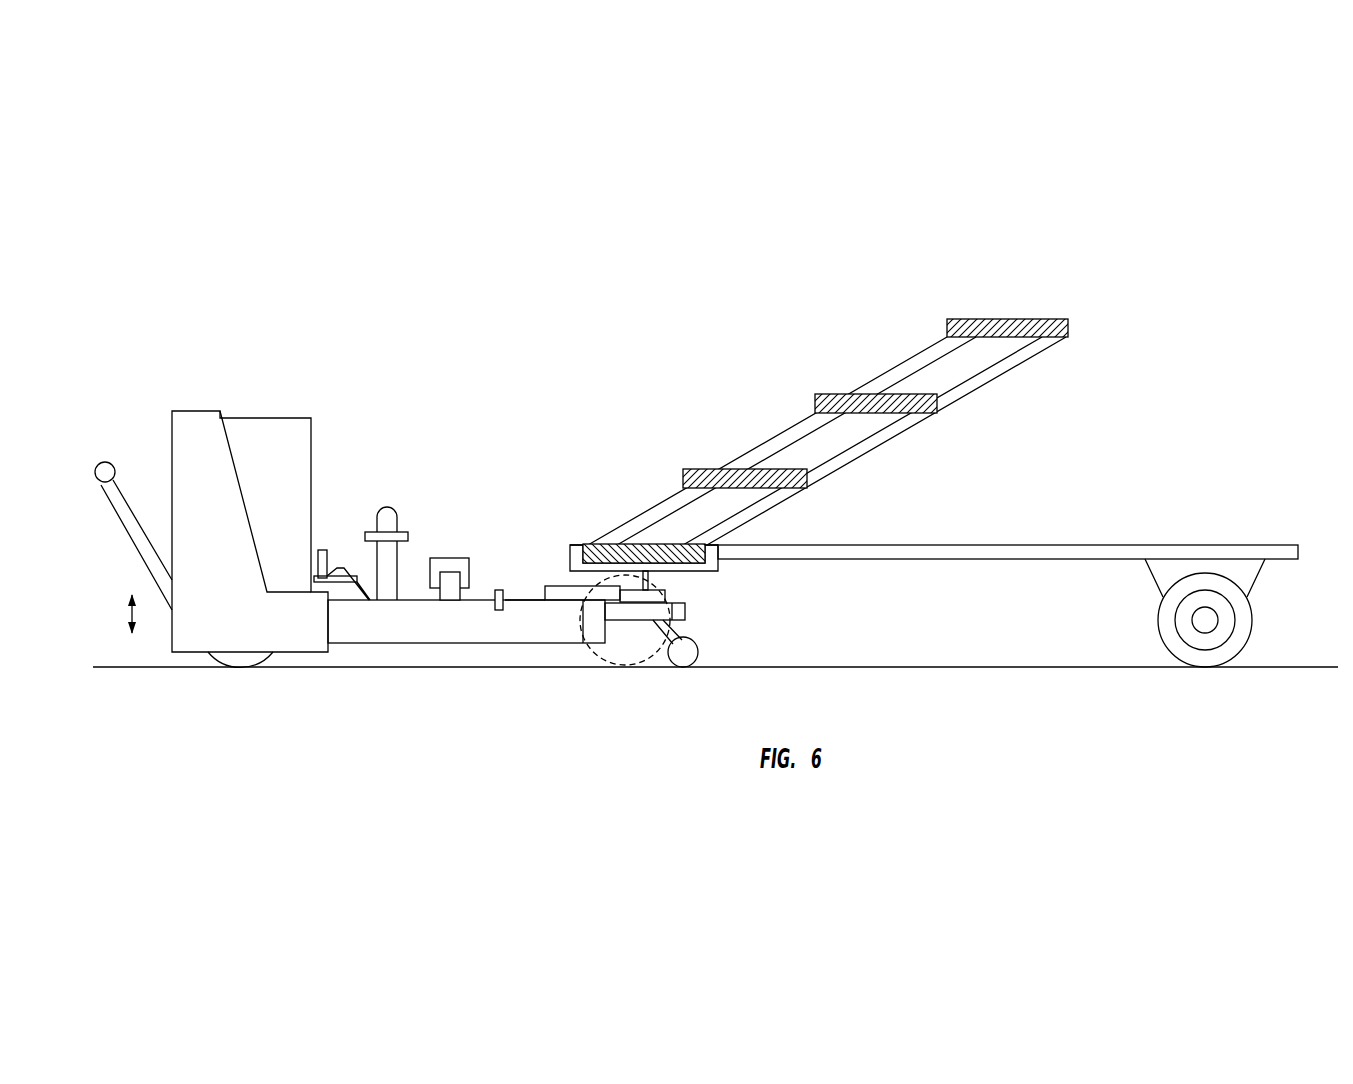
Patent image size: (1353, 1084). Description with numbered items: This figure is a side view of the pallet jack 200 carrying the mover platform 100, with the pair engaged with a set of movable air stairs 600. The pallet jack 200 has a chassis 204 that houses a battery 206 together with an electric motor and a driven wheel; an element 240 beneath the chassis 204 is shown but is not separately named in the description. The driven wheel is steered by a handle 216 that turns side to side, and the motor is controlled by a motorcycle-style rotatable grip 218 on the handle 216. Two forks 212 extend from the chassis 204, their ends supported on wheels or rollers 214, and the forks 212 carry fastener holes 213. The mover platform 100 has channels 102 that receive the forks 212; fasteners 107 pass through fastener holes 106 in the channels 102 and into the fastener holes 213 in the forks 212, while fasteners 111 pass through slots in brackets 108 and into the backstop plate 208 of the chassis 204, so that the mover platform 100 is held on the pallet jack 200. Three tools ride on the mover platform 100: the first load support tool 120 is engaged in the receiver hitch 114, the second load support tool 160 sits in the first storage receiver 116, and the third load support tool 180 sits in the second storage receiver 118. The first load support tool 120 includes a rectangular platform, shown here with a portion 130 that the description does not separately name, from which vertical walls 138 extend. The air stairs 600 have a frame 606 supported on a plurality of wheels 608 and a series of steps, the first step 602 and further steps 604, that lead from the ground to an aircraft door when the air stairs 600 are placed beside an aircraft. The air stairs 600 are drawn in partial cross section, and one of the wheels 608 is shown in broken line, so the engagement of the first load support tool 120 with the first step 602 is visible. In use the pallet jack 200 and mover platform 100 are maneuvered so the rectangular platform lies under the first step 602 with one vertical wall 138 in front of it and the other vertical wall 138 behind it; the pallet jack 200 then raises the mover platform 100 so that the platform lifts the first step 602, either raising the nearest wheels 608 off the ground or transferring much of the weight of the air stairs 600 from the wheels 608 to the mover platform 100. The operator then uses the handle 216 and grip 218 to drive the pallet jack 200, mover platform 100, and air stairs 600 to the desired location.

The mover platform 100 is at (578, 569).
The channels 102 is at (397, 637).
The fastener holes 106 is at (507, 601).
The fasteners 107 is at (498, 589).
The brackets 108 is at (340, 597).
The fasteners 111 is at (349, 575).
The receiver hitch 114 is at (552, 586).
The first storage receiver 116 is at (452, 599).
The second storage receiver 118 is at (391, 597).
The first load support tool 120 is at (685, 557).
The tray 130 is at (686, 569).
The vertical walls 138 is at (572, 544).
The second load support tool 160 is at (456, 559).
The third load support tool 180 is at (399, 526).
The pallet jack 200 is at (217, 519).
The chassis 204 is at (243, 623).
The battery 206 is at (290, 435).
The backstop plate 208 is at (320, 550).
The forks 212 is at (680, 612).
The fastener holes 213 is at (660, 636).
The wheels or rollers 214 is at (683, 661).
The handle 216 is at (122, 503).
The rotatable grip 218 is at (105, 462).
The cart wheel 240 is at (245, 660).
The air stairs 600 is at (939, 499).
The first step 602 is at (630, 544).
The steps 604 is at (960, 319).
The frame 606 is at (965, 560).
The wheels 608 is at (1200, 655).